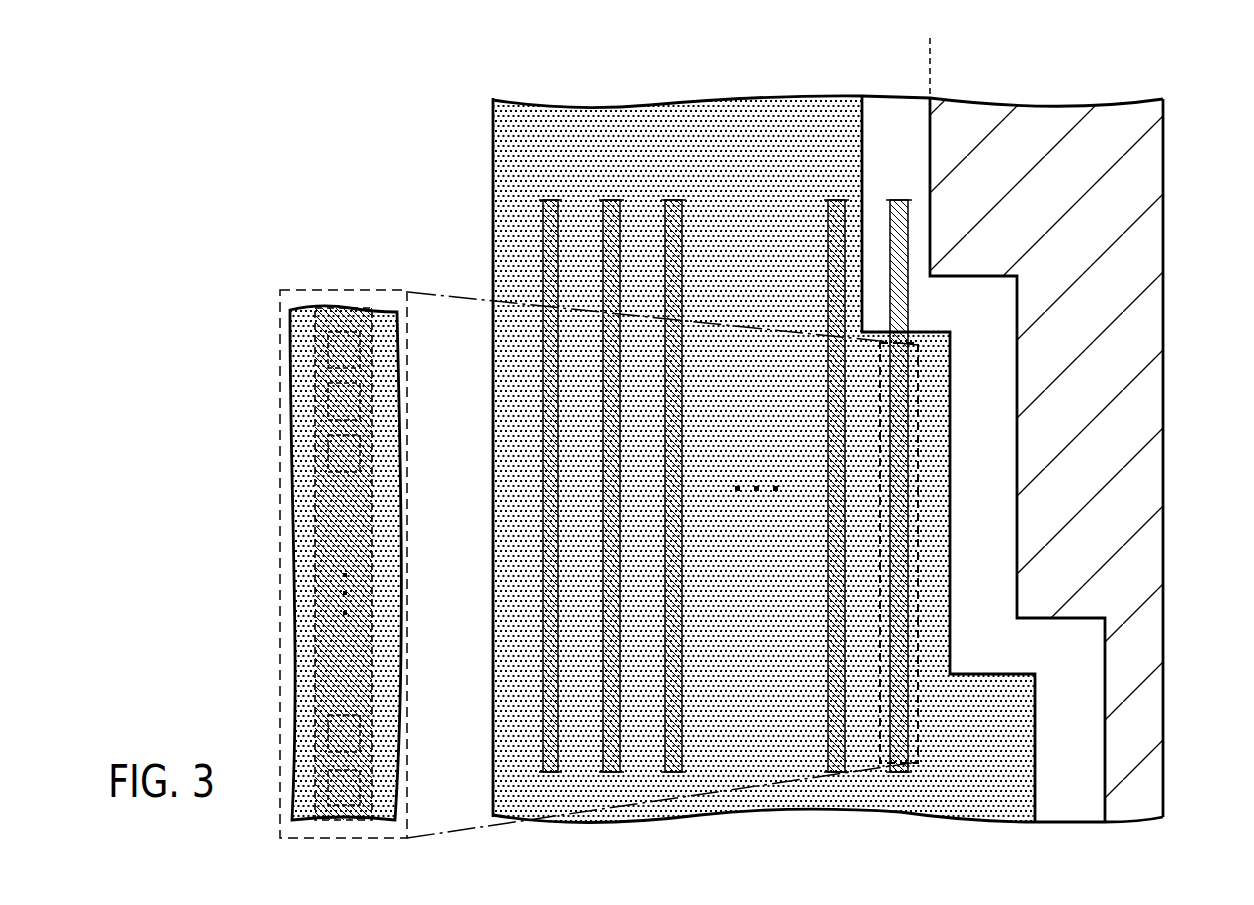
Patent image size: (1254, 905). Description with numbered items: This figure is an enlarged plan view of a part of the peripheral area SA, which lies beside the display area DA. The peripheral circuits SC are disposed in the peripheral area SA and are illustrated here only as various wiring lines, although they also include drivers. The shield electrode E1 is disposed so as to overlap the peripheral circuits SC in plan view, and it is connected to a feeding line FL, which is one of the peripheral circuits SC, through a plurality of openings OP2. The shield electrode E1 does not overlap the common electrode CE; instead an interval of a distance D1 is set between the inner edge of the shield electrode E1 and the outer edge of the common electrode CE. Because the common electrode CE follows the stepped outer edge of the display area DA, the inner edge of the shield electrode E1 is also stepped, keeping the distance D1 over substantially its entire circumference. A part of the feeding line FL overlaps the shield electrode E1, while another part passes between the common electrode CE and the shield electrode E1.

The shield electrode E1 is at (495, 148).
The peripheral area SA is at (918, 57).
The display area DA is at (1164, 70).
The peripheral circuits SC is at (538, 188).
The common electrode CE is at (1152, 162).
The distance D1 is at (1017, 488).
The openings OP2 is at (362, 445).
The feeding line FL is at (372, 572).